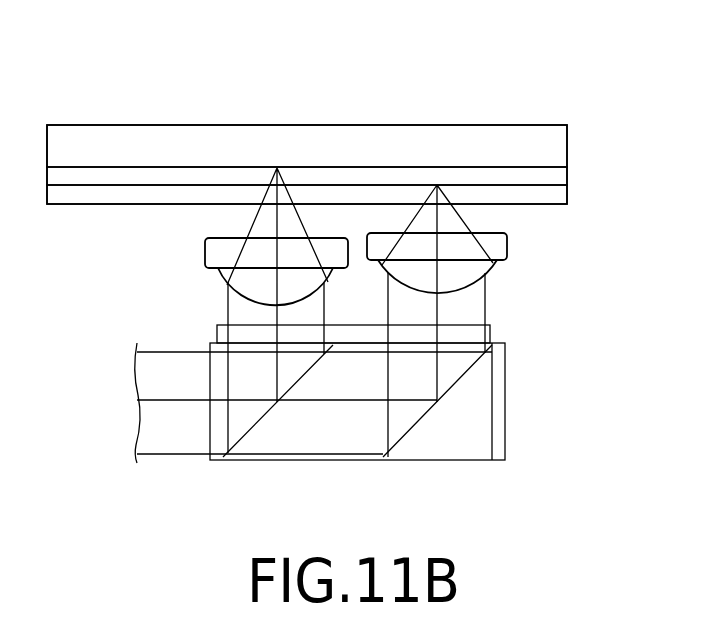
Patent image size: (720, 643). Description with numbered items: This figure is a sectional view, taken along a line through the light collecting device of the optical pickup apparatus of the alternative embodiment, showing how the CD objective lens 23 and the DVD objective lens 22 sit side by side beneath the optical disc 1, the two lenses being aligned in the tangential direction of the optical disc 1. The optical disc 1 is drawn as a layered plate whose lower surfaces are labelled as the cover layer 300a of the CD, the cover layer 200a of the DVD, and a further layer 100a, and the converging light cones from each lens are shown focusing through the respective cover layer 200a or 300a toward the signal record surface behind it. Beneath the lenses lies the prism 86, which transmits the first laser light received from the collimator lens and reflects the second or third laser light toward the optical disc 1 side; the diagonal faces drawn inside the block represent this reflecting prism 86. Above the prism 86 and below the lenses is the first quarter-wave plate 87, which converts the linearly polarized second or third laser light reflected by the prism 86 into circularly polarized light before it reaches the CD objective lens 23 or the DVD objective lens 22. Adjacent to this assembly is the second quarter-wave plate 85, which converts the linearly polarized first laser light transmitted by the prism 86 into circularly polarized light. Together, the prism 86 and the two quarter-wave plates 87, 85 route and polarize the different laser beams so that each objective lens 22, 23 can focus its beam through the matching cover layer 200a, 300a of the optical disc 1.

The optical disc 1 is at (306, 115).
The cover layer of the CD 300a is at (567, 157).
The cover layer of the DVD 200a is at (567, 184).
The lower substrate surface 100a is at (567, 204).
The CD objective lens 23 is at (222, 248).
The DVD objective lens 22 is at (497, 246).
The first λ/4 plate 87 is at (480, 335).
The second λ/4 plate 85 is at (497, 402).
The prism 86 is at (215, 372).